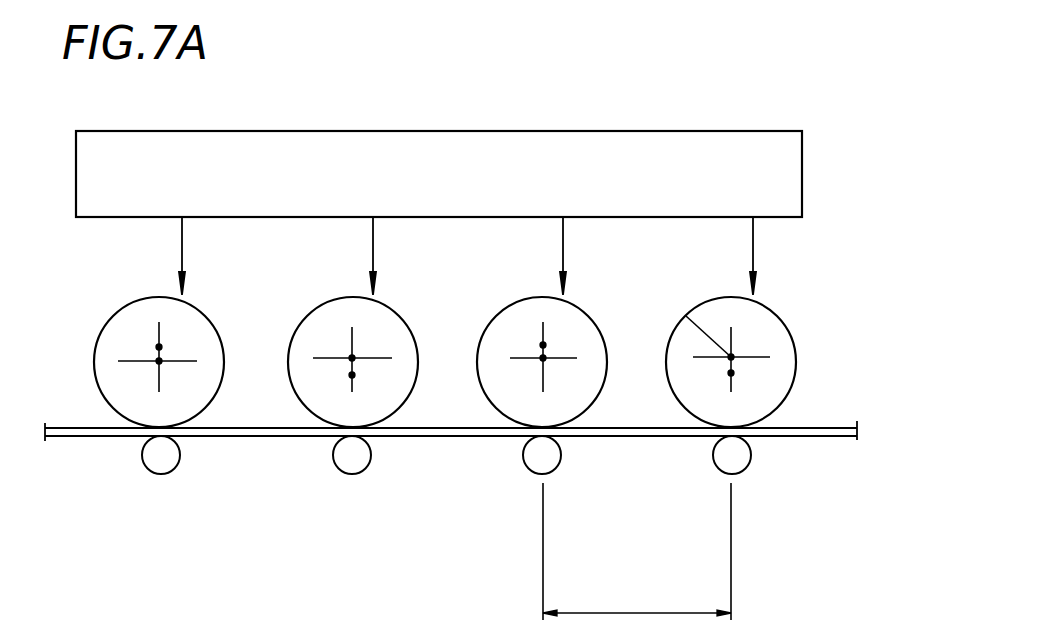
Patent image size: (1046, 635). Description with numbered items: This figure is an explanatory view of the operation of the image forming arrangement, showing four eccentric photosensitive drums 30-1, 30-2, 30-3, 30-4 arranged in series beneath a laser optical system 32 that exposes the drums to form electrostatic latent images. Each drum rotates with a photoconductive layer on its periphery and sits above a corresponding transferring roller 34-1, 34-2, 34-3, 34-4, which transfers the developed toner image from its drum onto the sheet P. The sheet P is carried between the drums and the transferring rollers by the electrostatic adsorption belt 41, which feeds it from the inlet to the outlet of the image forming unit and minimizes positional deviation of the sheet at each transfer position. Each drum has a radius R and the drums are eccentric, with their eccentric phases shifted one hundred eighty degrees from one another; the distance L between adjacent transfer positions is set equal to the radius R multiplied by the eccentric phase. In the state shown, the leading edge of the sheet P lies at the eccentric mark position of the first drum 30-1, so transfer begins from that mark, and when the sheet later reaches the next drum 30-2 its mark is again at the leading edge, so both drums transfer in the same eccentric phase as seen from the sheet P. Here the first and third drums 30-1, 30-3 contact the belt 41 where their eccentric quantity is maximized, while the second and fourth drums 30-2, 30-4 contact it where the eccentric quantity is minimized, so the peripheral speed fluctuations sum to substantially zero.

The laser optical system 32 is at (806, 158).
The photosensitive drum 30-1 is at (754, 337).
The photosensitive drum 30-2 is at (577, 306).
The photosensitive drum 30-3 is at (387, 306).
The photosensitive drum 30-4 is at (200, 306).
The transferring roller 34-1 is at (746, 466).
The transferring roller 34-2 is at (528, 468).
The transferring roller 34-3 is at (338, 469).
The transferring roller 34-4 is at (148, 470).
The electrostatic adsorption belt 41 is at (432, 437).
The sheet P is at (808, 426).
The radius of photosensitive drum R is at (708, 334).
The distance between photosensitive drums L is at (637, 551).